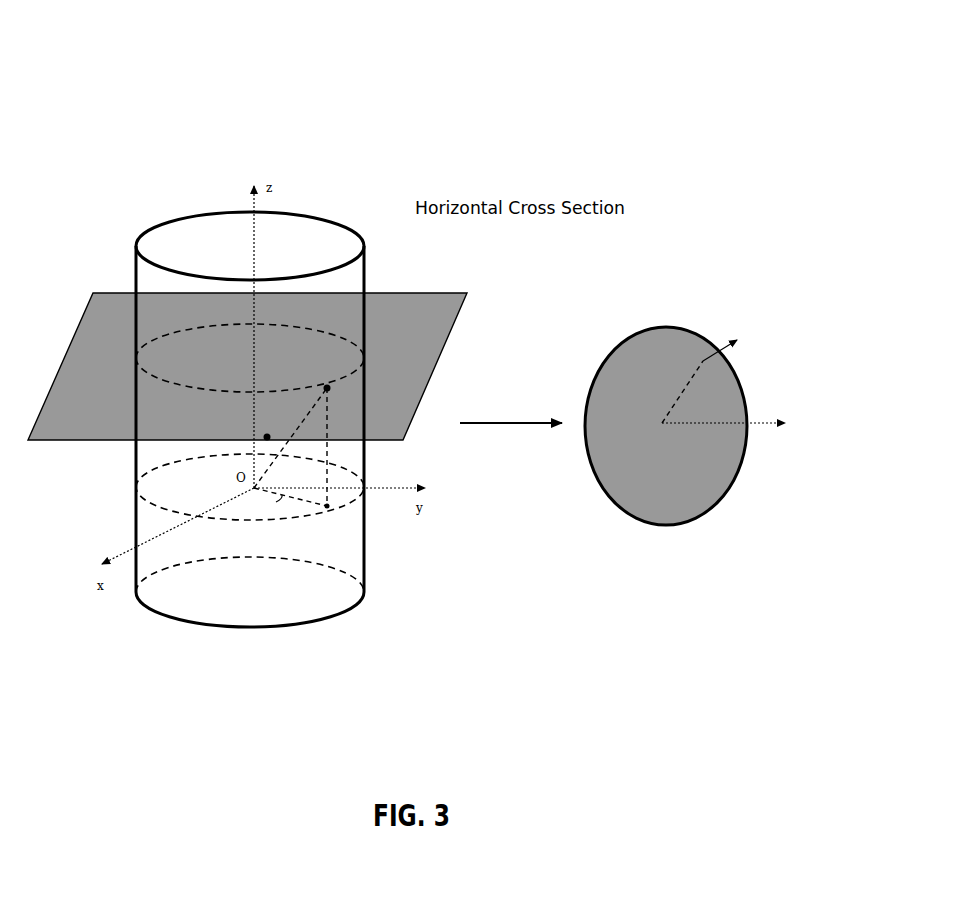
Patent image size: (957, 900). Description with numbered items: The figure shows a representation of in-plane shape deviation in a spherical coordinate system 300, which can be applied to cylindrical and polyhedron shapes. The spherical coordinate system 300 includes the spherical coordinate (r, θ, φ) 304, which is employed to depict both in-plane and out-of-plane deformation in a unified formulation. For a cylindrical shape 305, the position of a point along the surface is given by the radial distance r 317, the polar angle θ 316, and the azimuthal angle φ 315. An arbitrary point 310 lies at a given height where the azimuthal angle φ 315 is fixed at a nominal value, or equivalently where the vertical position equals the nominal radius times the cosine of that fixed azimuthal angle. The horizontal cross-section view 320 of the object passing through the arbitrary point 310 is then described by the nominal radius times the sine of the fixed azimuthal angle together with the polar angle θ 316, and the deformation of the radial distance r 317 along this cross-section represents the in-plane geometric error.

The spherical coordinate system 300 is at (124, 71).
The spherical coordinate (r, θ, φ) 304 is at (528, 432).
The cylindrical shape 305 is at (220, 238).
The arbitrary point P0 310 is at (342, 365).
The azimuthal angle φ 315 is at (242, 437).
The polar angle θ 316 is at (248, 503).
The radial distance r 317 is at (288, 407).
The horizontal cross-section view 320 is at (610, 512).